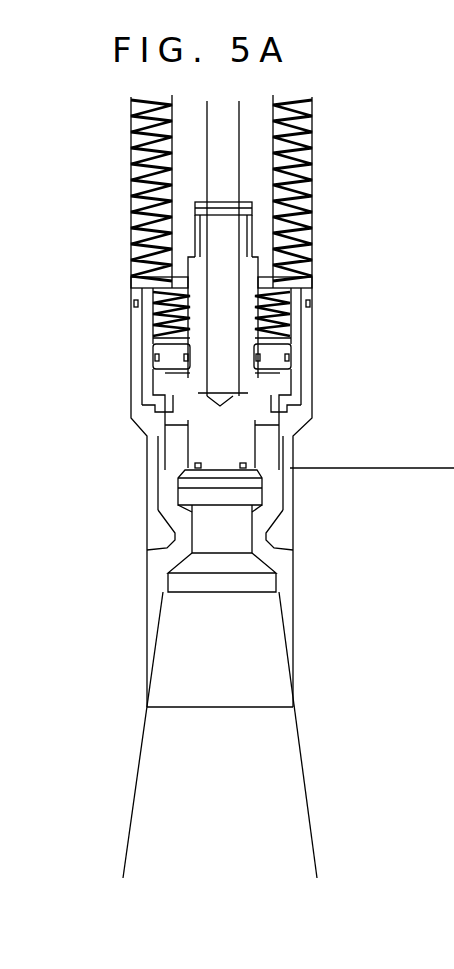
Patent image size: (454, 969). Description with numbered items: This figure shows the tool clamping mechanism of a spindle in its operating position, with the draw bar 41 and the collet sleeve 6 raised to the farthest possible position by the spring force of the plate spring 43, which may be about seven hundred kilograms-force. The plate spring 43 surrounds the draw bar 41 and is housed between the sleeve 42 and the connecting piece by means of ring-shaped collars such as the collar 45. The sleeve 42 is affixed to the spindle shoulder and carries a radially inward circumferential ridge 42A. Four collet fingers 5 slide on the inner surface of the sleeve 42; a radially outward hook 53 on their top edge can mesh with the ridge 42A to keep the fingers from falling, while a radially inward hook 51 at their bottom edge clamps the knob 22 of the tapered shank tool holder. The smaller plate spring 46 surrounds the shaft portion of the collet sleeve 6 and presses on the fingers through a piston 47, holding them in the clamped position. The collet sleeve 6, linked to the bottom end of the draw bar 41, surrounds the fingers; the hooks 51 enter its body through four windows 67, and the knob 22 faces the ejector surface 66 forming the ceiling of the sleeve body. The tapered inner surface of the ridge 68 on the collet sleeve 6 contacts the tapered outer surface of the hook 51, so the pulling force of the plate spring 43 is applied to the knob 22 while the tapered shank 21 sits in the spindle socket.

The draw bar 41 is at (312, 121).
The plate spring 43 is at (312, 168).
The ring-shaped collar 45 is at (140, 282).
The plate spring 46 is at (312, 283).
The sleeve 42 is at (312, 316).
The piston 47 is at (291, 348).
The hook 53 is at (287, 378).
The circumferential ridge 42A is at (290, 402).
The collet sleeve 6 is at (170, 416).
The collet fingers 5 is at (297, 443).
The windows 67 is at (297, 461).
The ejector surface 66 is at (213, 466).
The knob 22 is at (188, 489).
The hook 51 is at (285, 501).
The circumferential ridge portion 68 is at (285, 537).
The tapered shank 21 is at (207, 760).